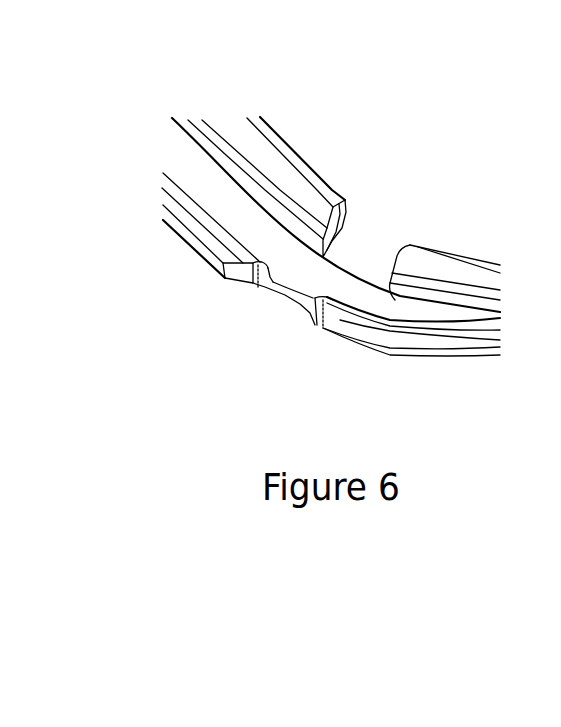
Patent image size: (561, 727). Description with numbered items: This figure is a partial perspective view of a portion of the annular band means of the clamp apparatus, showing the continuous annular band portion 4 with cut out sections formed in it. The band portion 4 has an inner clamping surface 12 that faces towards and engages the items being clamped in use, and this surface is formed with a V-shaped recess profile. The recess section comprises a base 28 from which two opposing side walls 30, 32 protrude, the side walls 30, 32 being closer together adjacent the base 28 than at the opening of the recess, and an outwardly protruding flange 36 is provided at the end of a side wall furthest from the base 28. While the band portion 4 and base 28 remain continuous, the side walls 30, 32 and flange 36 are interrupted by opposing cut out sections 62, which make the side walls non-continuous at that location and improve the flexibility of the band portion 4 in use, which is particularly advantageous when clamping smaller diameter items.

The annular band portion 4 is at (349, 171).
The inner clamping surface 12 is at (225, 188).
The base 28 is at (310, 268).
The side wall 30 is at (425, 263).
The side wall 32 is at (202, 232).
The outwardly protruding flange 36 is at (452, 256).
The cut out section 62 is at (361, 241).